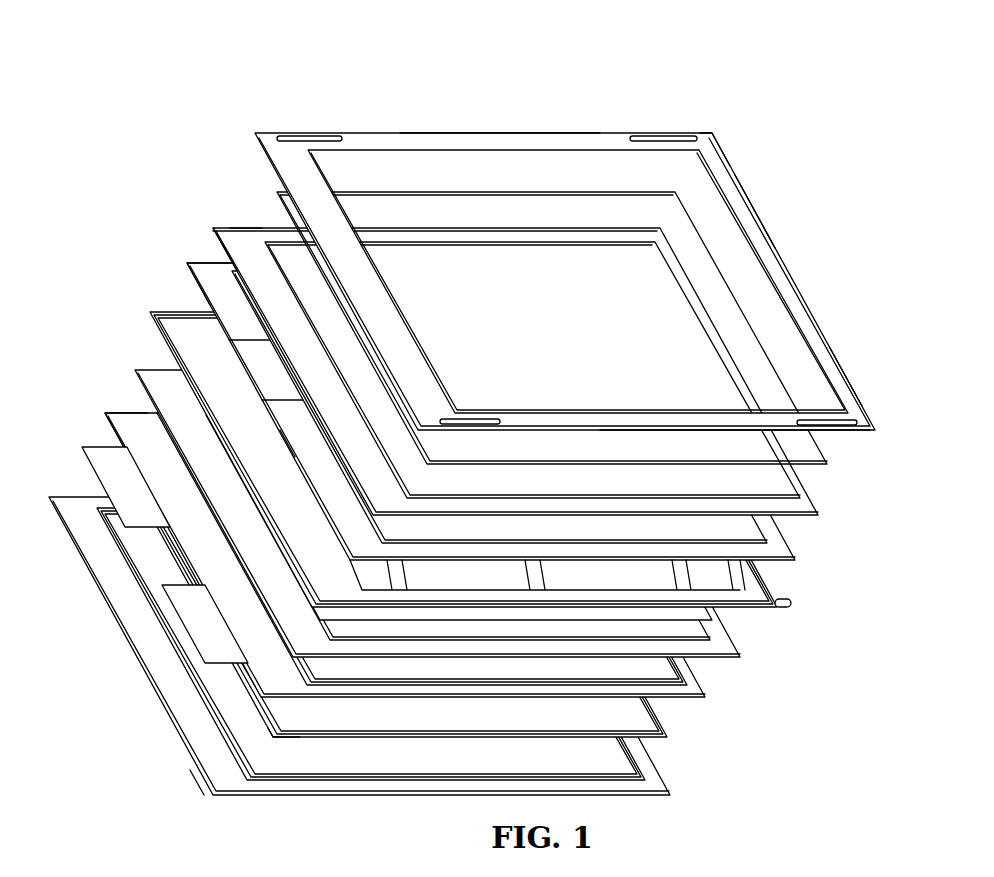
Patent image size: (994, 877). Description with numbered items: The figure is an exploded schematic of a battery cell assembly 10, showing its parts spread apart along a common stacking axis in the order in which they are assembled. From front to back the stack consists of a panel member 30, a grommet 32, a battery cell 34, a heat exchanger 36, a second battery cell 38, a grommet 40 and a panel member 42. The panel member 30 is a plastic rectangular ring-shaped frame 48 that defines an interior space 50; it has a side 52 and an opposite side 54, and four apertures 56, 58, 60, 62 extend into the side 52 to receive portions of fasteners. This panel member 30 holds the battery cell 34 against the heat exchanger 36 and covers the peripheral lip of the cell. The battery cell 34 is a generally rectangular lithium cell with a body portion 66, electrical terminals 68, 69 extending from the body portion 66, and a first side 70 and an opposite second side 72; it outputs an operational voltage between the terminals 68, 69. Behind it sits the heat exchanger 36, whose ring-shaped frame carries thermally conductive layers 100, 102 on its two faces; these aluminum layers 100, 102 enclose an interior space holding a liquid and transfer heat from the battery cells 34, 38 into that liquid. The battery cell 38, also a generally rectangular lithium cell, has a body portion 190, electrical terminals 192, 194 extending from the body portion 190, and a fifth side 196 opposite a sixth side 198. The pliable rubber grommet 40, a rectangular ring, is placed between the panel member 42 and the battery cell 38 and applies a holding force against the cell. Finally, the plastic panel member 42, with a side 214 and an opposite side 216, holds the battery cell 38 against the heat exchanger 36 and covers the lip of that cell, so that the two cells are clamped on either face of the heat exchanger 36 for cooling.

The battery cell assembly 10 is at (763, 104).
The panel member 30 is at (752, 178).
The grommet 32 is at (837, 466).
The battery cell 34 is at (806, 503).
The heat exchanger 36 is at (770, 668).
The battery cell 38 is at (717, 689).
The grommet 40 is at (680, 728).
The panel member 42 is at (675, 770).
The rectangular ring-shaped frame 48 is at (773, 254).
The interior space 50 is at (567, 177).
The side 52 is at (850, 399).
The side 54 is at (833, 435).
The aperture 56 is at (305, 136).
The aperture 58 is at (658, 138).
The aperture 60 is at (470, 418).
The aperture 62 is at (818, 420).
The body portion 66 is at (246, 244).
The electrical terminal 68 is at (204, 271).
The electrical terminal 69 is at (317, 448).
The first side 70 is at (222, 231).
The second side 72 is at (219, 240).
The thermally conductive layer 100 is at (772, 545).
The thermally conductive layer 102 is at (730, 653).
The body portion 190 is at (132, 427).
The electrical terminal 192 is at (112, 447).
The electrical terminal 194 is at (210, 628).
The fifth side 196 is at (278, 683).
The sixth side 198 is at (278, 740).
The side 214 is at (202, 773).
The side 216 is at (245, 792).